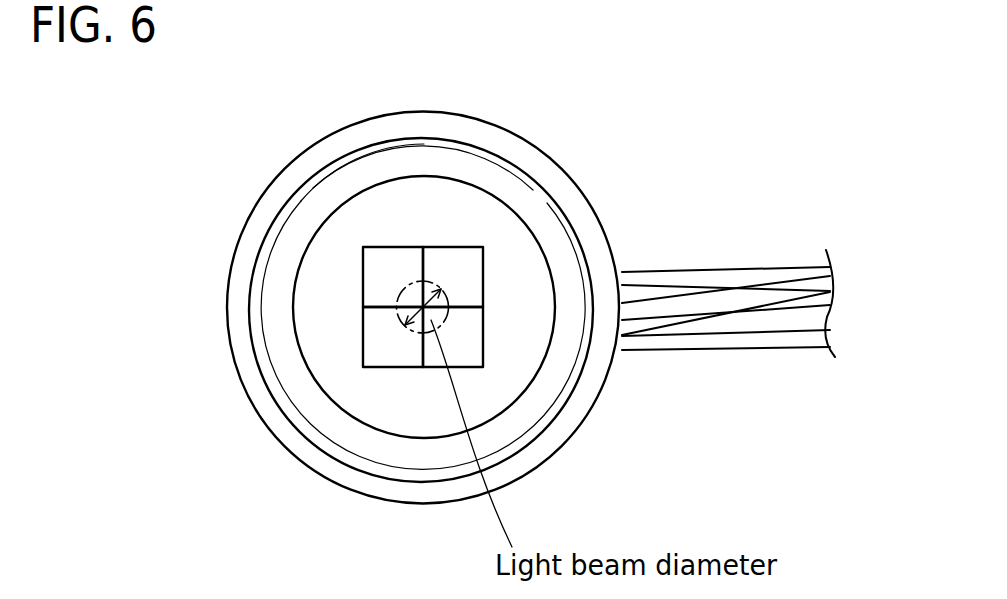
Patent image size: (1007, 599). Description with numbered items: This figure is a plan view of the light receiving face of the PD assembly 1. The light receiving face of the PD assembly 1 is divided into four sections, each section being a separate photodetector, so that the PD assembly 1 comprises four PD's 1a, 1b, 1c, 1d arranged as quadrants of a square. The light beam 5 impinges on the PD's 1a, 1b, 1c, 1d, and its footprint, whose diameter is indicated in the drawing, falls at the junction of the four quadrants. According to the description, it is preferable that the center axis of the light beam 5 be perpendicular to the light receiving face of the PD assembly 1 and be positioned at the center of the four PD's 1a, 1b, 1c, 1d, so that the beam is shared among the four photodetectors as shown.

The PD assembly 1 is at (623, 173).
The PD 1a is at (450, 270).
The PD 1b is at (395, 272).
The PD 1c is at (387, 338).
The PD 1d is at (467, 340).
The light beam 5 is at (423, 307).